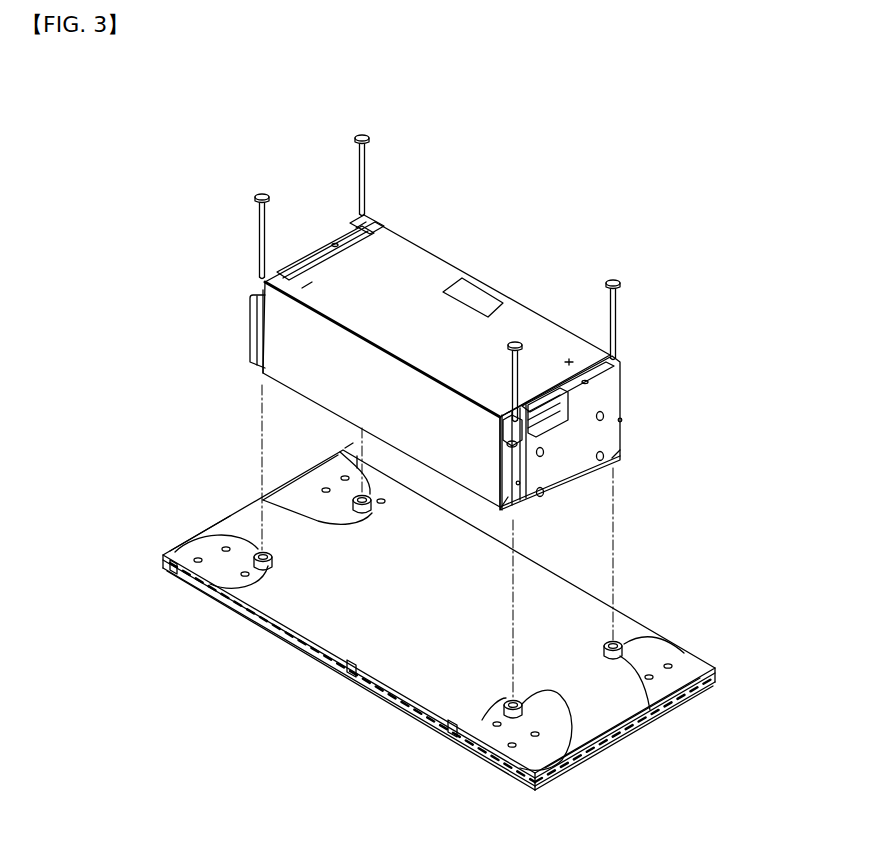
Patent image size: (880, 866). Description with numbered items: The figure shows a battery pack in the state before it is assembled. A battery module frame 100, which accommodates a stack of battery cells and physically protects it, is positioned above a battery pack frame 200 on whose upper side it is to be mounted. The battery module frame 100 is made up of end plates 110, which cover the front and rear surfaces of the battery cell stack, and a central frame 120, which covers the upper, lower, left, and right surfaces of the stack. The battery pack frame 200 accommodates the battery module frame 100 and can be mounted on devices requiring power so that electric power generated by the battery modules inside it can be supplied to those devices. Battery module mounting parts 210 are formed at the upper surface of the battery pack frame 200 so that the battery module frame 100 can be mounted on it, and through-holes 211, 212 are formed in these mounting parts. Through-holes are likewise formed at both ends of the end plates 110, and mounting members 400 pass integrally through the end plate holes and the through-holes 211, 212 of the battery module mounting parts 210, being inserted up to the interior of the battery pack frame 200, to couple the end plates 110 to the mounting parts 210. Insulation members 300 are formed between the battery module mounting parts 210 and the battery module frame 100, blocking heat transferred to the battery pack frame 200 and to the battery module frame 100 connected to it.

The battery module frame 100 is at (512, 279).
The end plate 110 is at (590, 462).
The central frame 120 is at (438, 268).
The battery pack frame 200 is at (323, 686).
The battery module mounting part 210 is at (262, 550).
The through-hole 211 is at (215, 548).
The through-hole 212 is at (360, 495).
The insulation member 300 is at (345, 505).
The mounting member 400 is at (362, 132).